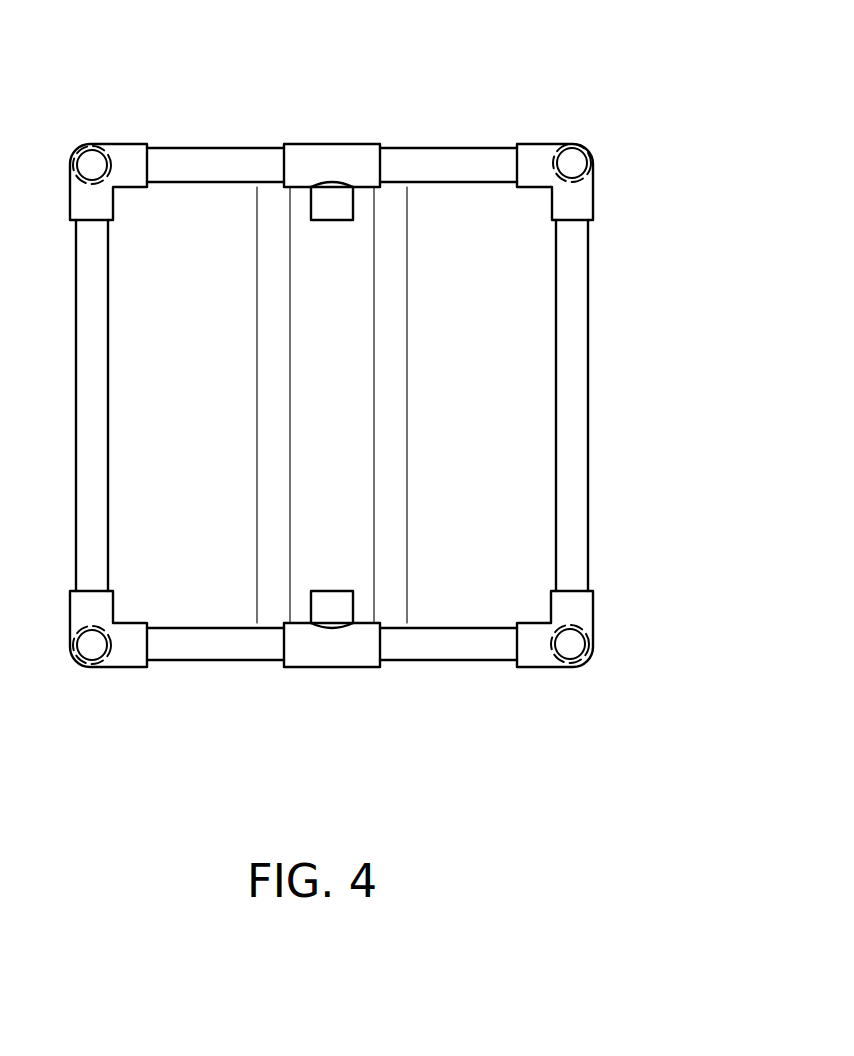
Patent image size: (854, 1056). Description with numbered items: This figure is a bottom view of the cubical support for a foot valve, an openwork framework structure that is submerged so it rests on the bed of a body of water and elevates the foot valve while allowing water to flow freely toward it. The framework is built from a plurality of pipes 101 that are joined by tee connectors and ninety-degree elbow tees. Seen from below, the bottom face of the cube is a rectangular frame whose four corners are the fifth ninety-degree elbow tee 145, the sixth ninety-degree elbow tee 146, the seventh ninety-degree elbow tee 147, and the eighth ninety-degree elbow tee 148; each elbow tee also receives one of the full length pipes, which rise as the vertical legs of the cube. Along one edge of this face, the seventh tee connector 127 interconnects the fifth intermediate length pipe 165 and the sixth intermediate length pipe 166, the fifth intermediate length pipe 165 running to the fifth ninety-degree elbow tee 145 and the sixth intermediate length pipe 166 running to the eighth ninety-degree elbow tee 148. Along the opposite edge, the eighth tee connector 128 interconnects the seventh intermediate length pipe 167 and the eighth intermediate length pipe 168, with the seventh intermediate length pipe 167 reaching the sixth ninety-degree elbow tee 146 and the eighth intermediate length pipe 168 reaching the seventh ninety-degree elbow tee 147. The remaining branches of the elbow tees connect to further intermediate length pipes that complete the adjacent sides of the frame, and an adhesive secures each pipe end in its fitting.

The plurality of pipes 101 is at (585, 388).
The seventh tee connector 127 is at (317, 147).
The eighth tee connector 128 is at (332, 665).
The fifth 90-degree elbow tee 145 is at (597, 190).
The sixth 90-degree elbow tee 146 is at (593, 617).
The seventh 90-degree elbow tee 147 is at (115, 667).
The eighth 90-degree elbow tee 148 is at (105, 145).
The fifth intermediate length pipe 165 is at (438, 147).
The sixth intermediate length pipe 166 is at (210, 147).
The seventh intermediate length pipe 167 is at (448, 662).
The eighth intermediate length pipe 168 is at (202, 662).